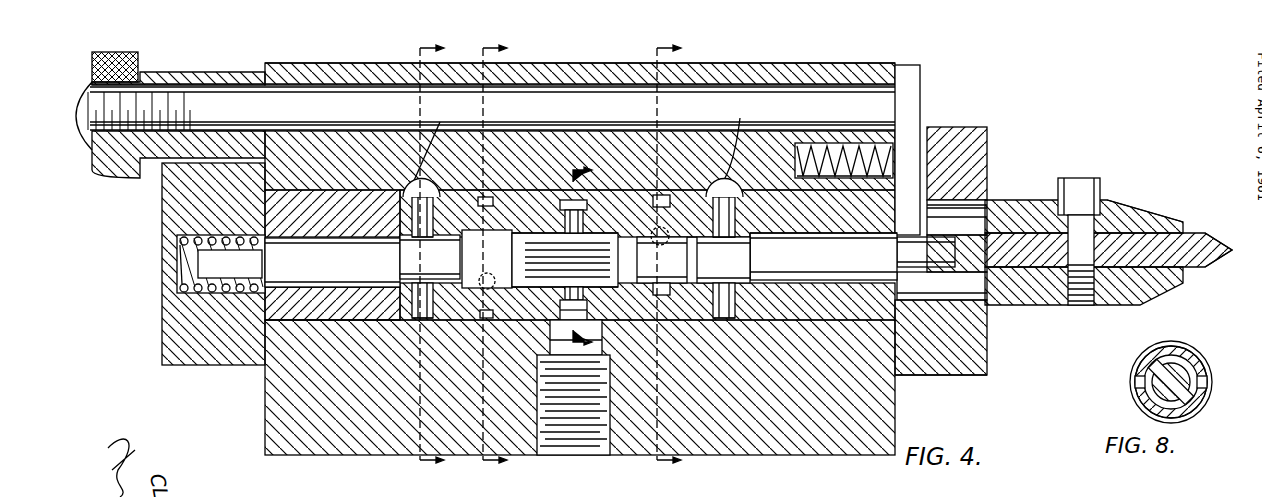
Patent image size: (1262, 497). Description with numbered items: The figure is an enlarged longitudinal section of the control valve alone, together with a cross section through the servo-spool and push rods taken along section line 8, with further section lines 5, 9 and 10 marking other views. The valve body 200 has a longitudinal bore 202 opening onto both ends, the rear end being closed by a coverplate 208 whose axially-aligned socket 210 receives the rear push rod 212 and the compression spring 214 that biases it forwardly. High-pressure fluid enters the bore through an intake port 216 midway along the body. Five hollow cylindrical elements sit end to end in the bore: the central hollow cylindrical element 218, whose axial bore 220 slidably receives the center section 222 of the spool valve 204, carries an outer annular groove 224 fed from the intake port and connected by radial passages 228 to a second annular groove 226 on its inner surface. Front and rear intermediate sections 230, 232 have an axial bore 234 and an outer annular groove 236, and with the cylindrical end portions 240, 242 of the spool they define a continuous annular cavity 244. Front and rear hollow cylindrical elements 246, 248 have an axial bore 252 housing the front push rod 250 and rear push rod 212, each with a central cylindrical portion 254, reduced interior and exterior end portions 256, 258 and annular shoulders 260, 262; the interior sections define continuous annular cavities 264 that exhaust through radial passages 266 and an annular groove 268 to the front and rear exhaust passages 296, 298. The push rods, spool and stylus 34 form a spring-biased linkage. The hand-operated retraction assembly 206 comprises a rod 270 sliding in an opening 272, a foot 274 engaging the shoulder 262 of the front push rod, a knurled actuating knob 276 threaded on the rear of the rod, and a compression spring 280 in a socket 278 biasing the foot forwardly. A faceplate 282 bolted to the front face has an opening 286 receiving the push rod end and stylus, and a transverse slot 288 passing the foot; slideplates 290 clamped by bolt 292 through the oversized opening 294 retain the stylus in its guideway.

In FIG. 4, the valve body 200 is at (268, 447).
In FIG. 4, the longitudinal bore 202 is at (352, 325).
In FIG. 4, the spool valve 204 is at (603, 240).
In FIG. 4, the hand-operated retraction assembly 206 is at (912, 78).
In FIG. 4, the coverplate 208 is at (170, 334).
In FIG. 4, the socket 210 is at (205, 276).
In FIG. 4, the rear push rod 212 is at (332, 262).
In FIG. 4, the compression spring 214 is at (196, 261).
In FIG. 4, the intake port 216 is at (582, 448).
In FIG. 4, the central hollow cylindrical element 218 is at (590, 310).
In FIG. 8, the central hollow cylindrical element 218 is at (1142, 370).
In FIG. 4, the axial bore 220 is at (565, 231).
In FIG. 8, the axial bore 220 is at (1186, 398).
In FIG. 8, the center section 222 is at (1190, 360).
In FIG. 4, the annular groove 224 is at (548, 366).
In FIG. 8, the annular groove 224 is at (1145, 356).
In FIG. 4, the second annular groove 226 is at (575, 290).
In FIG. 8, the second annular groove 226 is at (1150, 395).
In FIG. 4, the radial passages 228 is at (562, 318).
In FIG. 8, the radial passages 228 is at (1138, 383).
In FIG. 4, the front intermediate hollow cylindrical section 230 is at (703, 330).
In FIG. 4, the rear intermediate hollow cylindrical section 232 is at (482, 292).
In FIG. 4, the axial bore 234 is at (510, 170).
In FIG. 4, the outer annular groove 236 is at (486, 197).
In FIG. 4, the cylindrical end portion 240 is at (662, 260).
In FIG. 4, the cylindrical end portion 242 is at (487, 259).
In FIG. 4, the continuous annular cavity 244 is at (433, 203).
In FIG. 4, the front hollow cylindrical element 246 is at (750, 330).
In FIG. 4, the rear hollow cylindrical element 248 is at (310, 328).
In FIG. 4, the front push rod 250 is at (823, 249).
In FIG. 4, the axial bore 252 is at (362, 186).
In FIG. 4, the central cylindrical portion 254 is at (622, 256).
In FIG. 4, the interior end portion 256 is at (575, 259).
In FIG. 4, the exterior end portion 258 is at (185, 278).
In FIG. 4, the annular shoulder 260 is at (750, 250).
In FIG. 4, the annular shoulder 262 is at (240, 305).
In FIG. 4, the continuous annular cavity 264 is at (414, 310).
In FIG. 4, the radial passages 266 is at (412, 188).
In FIG. 4, the annular groove 268 is at (712, 182).
In FIG. 4, the rod 270 is at (748, 98).
In FIG. 4, the opening 272 is at (805, 80).
In FIG. 4, the foot 274 is at (918, 108).
In FIG. 4, the knurled actuating knob 276 is at (138, 58).
In FIG. 4, the socket 278 is at (802, 143).
In FIG. 4, the compression spring 280 is at (848, 143).
In FIG. 4, the faceplate 282 is at (985, 158).
In FIG. 4, the opening 286 is at (975, 322).
In FIG. 4, the transverse slot 288 is at (940, 130).
In FIG. 4, the slideplates 290 is at (1118, 200).
In FIG. 4, the bolt 292 is at (1085, 190).
In FIG. 4, the oversized opening 294 is at (1112, 240).
In FIG. 4, the front exhaust passage 296 is at (720, 140).
In FIG. 4, the rear exhaust passage 298 is at (439, 143).
In FIG. 4, the stylus 34 is at (1195, 232).
In FIG. 4, the section line 5 is at (423, 257).
In FIG. 4, the section line 8— 8 is at (579, 256).
In FIG. 4, the section line 9 is at (493, 257).
In FIG. 4, the section line 10 is at (666, 257).